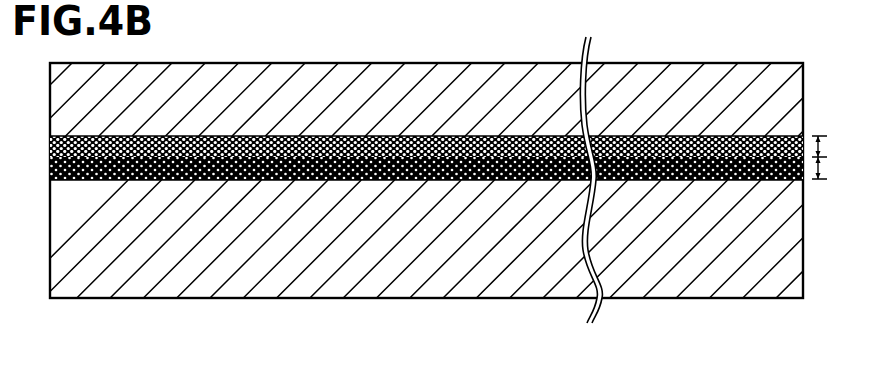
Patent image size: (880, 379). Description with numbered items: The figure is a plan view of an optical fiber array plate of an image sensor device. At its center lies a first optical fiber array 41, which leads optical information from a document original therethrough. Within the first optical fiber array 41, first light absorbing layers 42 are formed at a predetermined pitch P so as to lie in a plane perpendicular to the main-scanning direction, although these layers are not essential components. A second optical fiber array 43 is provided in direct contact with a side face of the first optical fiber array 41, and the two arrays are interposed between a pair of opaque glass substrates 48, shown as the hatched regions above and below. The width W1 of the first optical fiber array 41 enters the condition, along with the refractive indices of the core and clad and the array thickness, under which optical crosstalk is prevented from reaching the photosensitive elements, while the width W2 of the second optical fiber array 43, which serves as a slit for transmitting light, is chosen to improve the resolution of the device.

The first optical fiber array 41 is at (233, 180).
The first light absorbing layers 42 is at (318, 180).
The second optical fiber array 43 is at (285, 133).
The opaque glass substrates 48 is at (428, 260).
The predetermined pitch P is at (426, 149).
The width of the first optical fiber array W1 is at (837, 172).
The width of the second optical fiber array W2 is at (837, 143).